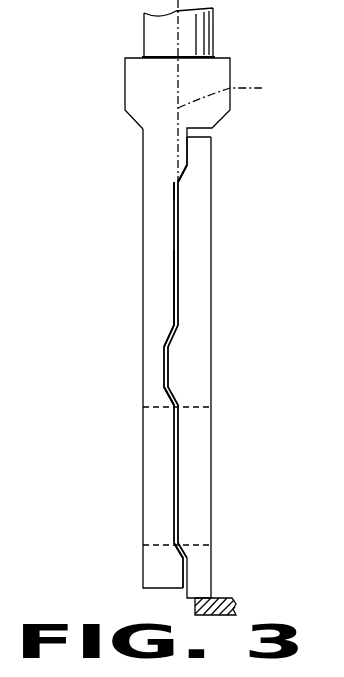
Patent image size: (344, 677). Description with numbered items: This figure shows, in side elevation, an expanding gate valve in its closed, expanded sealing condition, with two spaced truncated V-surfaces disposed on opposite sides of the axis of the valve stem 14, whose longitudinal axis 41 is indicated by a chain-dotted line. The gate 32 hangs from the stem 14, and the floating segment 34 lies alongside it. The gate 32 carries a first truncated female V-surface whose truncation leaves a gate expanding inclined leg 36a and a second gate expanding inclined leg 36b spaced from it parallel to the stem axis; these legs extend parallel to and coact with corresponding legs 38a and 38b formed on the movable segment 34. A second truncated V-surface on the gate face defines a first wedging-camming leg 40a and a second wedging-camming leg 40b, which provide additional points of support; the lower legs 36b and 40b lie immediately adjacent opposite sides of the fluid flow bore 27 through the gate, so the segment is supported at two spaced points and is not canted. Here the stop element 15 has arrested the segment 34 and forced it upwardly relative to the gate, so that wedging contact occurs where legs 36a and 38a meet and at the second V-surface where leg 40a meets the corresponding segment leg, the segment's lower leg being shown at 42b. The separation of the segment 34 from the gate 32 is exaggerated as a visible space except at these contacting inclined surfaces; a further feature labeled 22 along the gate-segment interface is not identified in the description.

The valve stem 14 is at (162, 50).
The longitudinal axis of the valve stem 41 is at (207, 97).
The wedging-camming leg of segment 38a is at (181, 172).
The gate expanding inclined leg 36a is at (177, 176).
The gate 32 is at (167, 266).
The segment 34 is at (200, 266).
The blade contact region 22 is at (176, 334).
The first wedging-camming leg 40a is at (176, 334).
The second wedging-camming leg 40b is at (165, 397).
The offset portion 42b is at (167, 395).
The fluid flow port or fluid flow bore 27 is at (158, 542).
The wedging-camming leg of segment 38b is at (198, 522).
The gate expanding inclined leg 36b is at (177, 553).
The stop element 15 is at (217, 599).